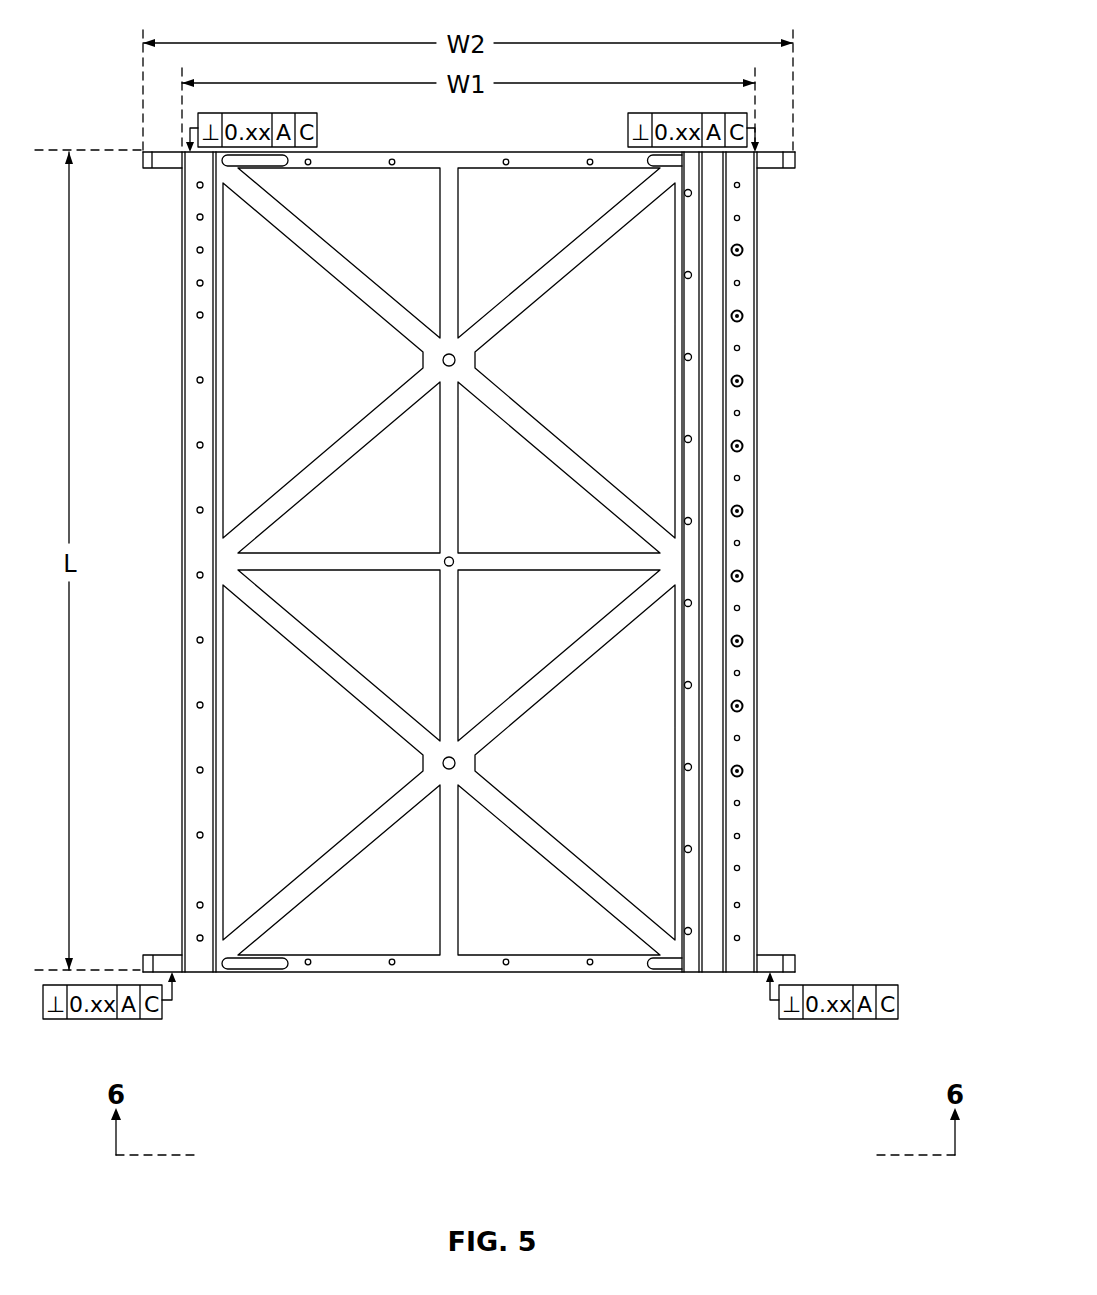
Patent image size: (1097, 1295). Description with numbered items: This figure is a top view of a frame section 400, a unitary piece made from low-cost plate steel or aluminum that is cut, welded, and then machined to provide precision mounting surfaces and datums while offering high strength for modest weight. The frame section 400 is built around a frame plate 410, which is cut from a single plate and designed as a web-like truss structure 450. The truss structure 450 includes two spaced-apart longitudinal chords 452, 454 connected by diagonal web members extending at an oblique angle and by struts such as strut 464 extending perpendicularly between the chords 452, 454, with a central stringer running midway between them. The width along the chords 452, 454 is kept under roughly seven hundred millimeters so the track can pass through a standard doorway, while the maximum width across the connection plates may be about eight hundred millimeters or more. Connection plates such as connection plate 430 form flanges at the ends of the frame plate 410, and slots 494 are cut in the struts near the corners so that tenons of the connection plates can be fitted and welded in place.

The frame section 400 is at (866, 28).
The frame plate 410 is at (614, 962).
The connection plate 430 is at (168, 965).
The truss structure 450 is at (584, 440).
The longitudinal chord 452 is at (757, 644).
The longitudinal chord 454 is at (185, 721).
The strut 464 is at (522, 162).
The slot 494 is at (275, 162).